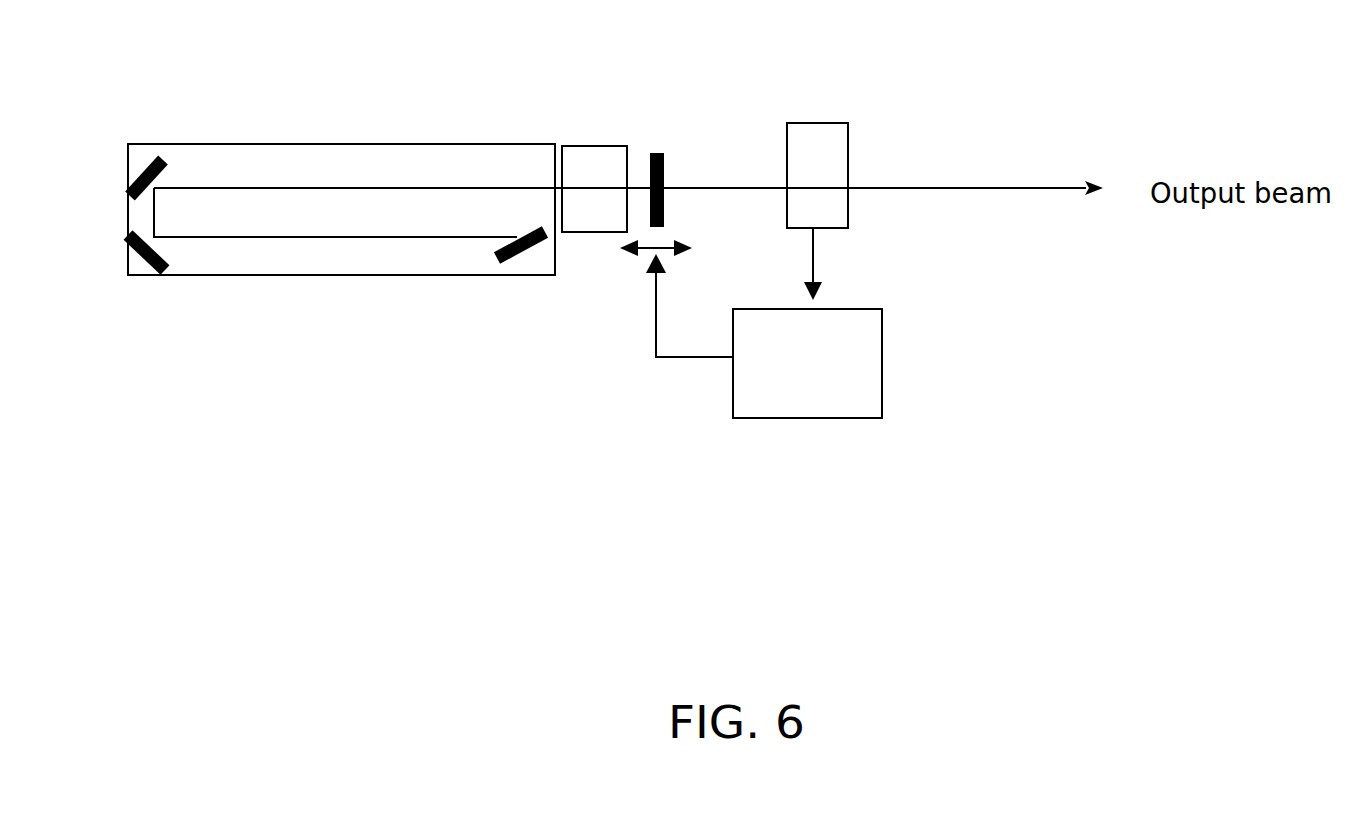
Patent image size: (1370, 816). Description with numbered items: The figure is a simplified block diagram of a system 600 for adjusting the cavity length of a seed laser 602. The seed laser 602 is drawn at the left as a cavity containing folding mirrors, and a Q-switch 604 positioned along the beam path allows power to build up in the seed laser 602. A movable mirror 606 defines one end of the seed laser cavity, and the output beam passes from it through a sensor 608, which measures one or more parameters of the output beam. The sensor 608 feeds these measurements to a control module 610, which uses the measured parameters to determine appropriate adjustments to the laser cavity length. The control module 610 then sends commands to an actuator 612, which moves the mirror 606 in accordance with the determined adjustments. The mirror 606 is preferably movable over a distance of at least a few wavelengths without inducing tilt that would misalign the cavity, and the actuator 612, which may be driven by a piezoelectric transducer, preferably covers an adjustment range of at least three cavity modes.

The system 600 is at (368, 426).
The seed laser 602 is at (346, 128).
The Q-switch 604 is at (582, 135).
The movable mirror 606 is at (673, 147).
The sensor 608 is at (865, 130).
The control module 610 is at (902, 353).
The actuator 612 is at (615, 273).